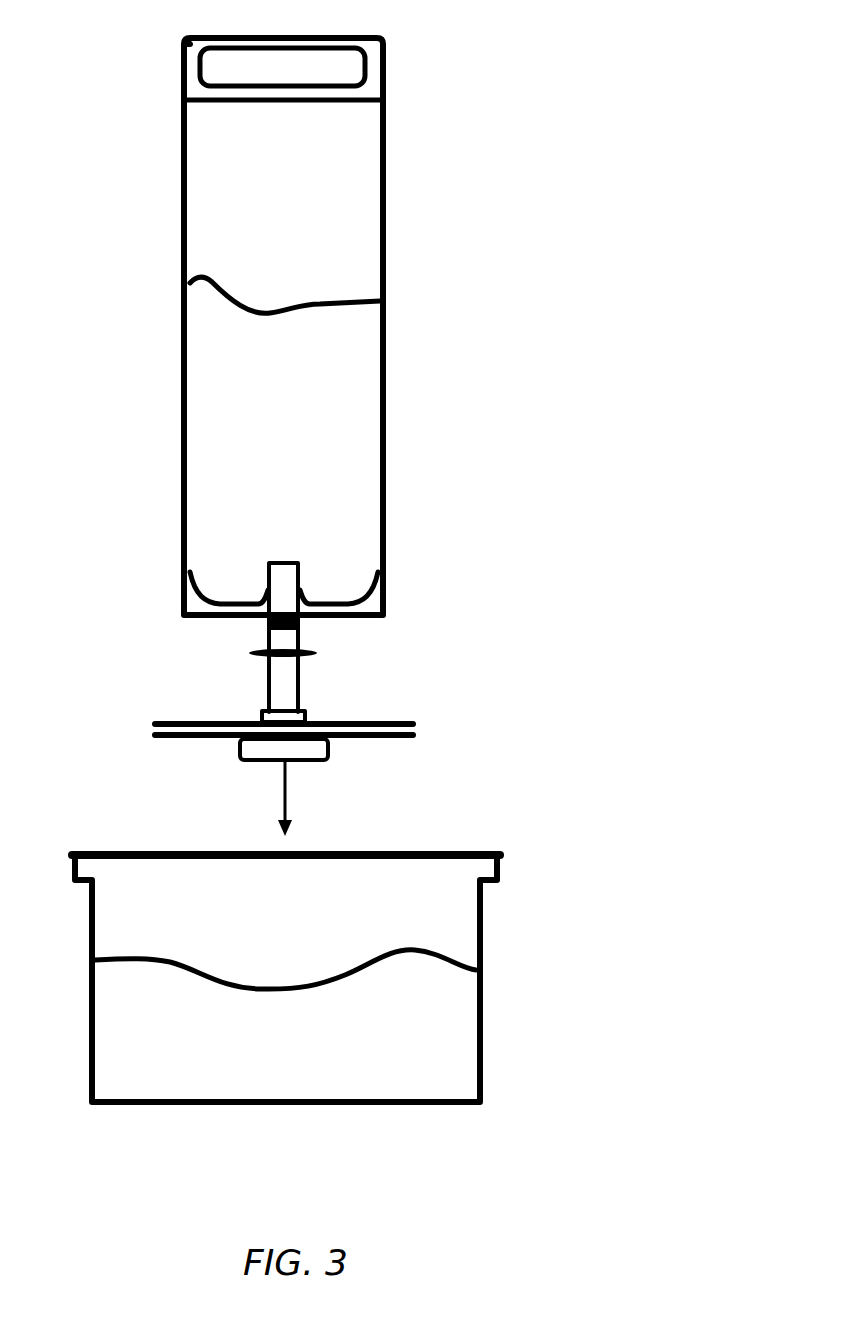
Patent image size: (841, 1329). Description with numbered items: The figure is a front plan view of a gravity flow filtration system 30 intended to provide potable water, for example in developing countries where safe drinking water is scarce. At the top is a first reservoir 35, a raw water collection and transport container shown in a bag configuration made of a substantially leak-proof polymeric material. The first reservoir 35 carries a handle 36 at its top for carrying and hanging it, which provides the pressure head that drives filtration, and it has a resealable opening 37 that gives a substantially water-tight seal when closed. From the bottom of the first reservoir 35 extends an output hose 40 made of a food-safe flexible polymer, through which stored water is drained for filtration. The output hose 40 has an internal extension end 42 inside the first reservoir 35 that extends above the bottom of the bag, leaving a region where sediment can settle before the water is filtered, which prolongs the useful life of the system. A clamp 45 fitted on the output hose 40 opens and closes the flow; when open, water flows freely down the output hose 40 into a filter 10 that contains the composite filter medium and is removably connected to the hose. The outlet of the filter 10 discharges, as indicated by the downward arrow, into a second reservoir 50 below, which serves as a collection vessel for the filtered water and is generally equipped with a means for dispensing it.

The filtration system 30 is at (277, 390).
The first reservoir 35 is at (338, 224).
The handle 36 is at (385, 45).
The resealable opening 37 is at (183, 96).
The internal extension end 42 is at (275, 570).
The clamp 45 is at (252, 653).
The output hose 40 is at (285, 670).
The filter 10 is at (390, 725).
The second reservoir 50 is at (173, 895).